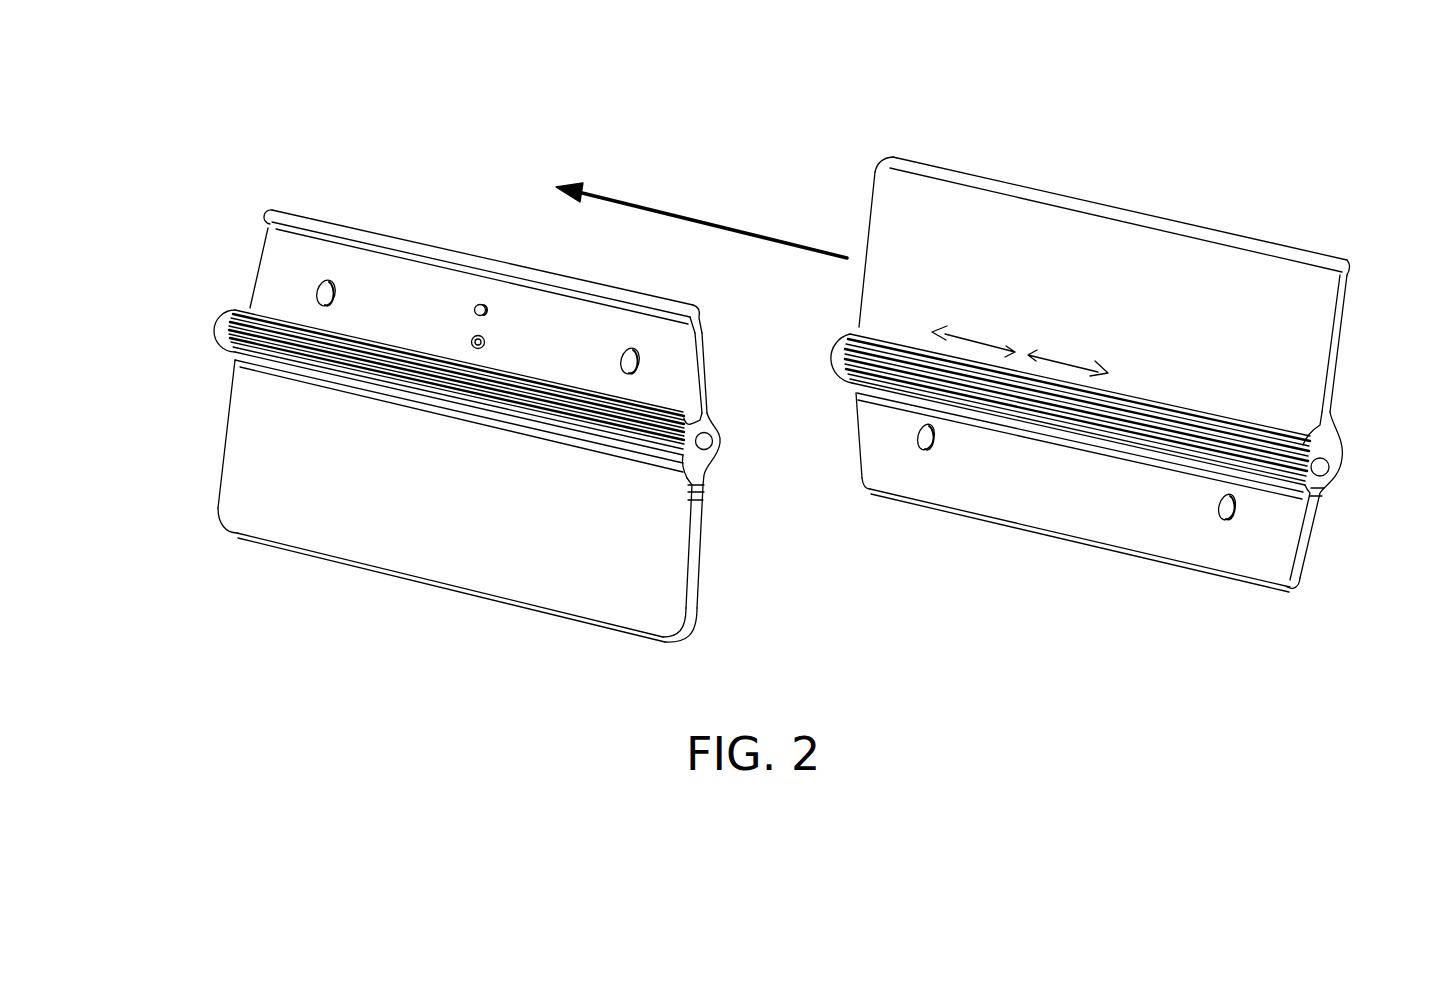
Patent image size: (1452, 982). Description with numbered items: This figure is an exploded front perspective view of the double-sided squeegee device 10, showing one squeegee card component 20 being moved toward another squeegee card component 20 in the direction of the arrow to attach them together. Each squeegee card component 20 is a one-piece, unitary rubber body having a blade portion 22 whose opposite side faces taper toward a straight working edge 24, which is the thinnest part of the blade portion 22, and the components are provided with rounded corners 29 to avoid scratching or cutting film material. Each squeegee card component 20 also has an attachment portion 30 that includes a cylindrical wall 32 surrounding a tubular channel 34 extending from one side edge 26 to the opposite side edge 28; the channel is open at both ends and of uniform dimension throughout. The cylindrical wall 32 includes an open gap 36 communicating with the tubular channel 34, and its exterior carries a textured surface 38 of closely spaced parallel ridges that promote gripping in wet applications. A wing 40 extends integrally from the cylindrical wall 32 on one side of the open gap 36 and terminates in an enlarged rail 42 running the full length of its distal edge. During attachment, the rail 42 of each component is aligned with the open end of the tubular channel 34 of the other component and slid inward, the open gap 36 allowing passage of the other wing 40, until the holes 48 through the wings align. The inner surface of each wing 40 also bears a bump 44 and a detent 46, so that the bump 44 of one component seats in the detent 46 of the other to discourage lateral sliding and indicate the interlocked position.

The double-sided squeegee device 10 is at (1196, 157).
The squeegee card component 20 is at (424, 529).
The blade portion 22 is at (517, 542).
The working edge 24 is at (560, 613).
The side edge 26 is at (706, 546).
The opposite side edge 28 is at (226, 430).
The rounded corners 29 is at (222, 520).
The attachment portion 30 is at (277, 278).
The cylindrical wall 32 is at (684, 446).
The tubular channel 34 is at (706, 441).
The open gap 36 is at (700, 402).
The textured surface 38 is at (252, 340).
The wing 40 is at (667, 355).
The enlarged rail 42 is at (430, 248).
The bump 44 is at (472, 310).
The detent 46 is at (486, 342).
The holes 48 is at (328, 282).